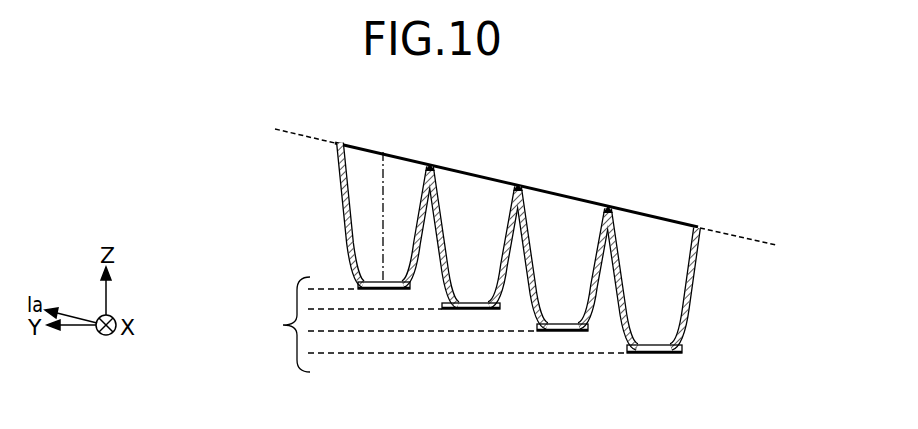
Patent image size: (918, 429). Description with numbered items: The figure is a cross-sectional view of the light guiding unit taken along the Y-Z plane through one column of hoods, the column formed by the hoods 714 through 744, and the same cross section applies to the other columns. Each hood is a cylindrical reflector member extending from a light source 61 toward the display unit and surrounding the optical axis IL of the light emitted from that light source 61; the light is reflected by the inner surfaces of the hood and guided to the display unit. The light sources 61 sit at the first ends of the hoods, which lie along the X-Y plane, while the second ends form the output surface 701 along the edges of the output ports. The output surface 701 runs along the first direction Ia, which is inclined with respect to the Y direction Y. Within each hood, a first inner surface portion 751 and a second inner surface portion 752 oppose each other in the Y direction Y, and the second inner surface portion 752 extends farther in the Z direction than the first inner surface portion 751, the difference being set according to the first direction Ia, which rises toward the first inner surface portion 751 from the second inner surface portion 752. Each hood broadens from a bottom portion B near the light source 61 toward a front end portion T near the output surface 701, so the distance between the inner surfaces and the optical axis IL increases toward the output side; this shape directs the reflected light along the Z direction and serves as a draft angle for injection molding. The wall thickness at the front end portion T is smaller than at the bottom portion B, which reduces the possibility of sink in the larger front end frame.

The hood 744 is at (338, 203).
The hood 714 is at (702, 292).
The second inner surface portion 752 is at (345, 160).
The first inner surface portion 751 is at (428, 190).
The output surface 701 is at (542, 189).
The light source 61 is at (373, 281).
The front end portion T is at (613, 210).
The bottom portion B is at (630, 346).
The optical axis IL is at (384, 205).
The Y direction Y is at (440, 324).
The first direction Ia is at (513, 179).